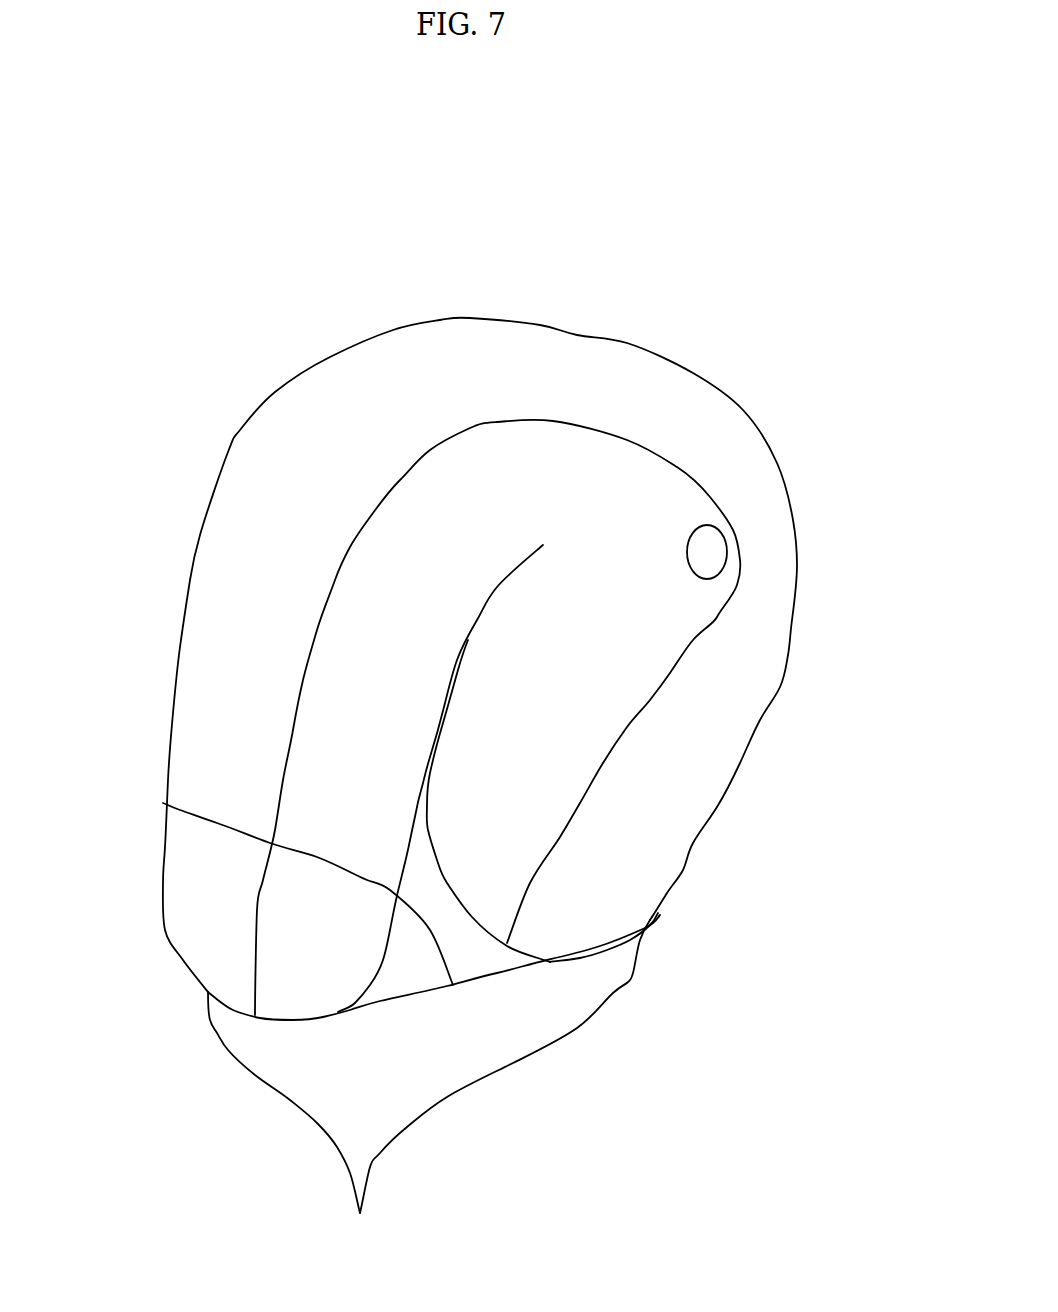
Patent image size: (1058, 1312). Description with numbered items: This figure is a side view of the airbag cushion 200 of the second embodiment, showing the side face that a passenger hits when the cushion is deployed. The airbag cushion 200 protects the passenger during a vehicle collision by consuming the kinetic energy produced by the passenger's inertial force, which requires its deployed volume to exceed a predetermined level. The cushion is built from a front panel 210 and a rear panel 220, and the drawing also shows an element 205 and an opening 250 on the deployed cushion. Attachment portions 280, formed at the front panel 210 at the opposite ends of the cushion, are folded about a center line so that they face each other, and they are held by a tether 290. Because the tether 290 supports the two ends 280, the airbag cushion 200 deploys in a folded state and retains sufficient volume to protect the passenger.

The airbag cushion 200 is at (554, 616).
The ring portion 205 is at (553, 420).
The front panel 210 is at (673, 783).
The rear panel 220 is at (517, 840).
The fastening hole 250 is at (707, 553).
The attachment portions 280 is at (429, 1086).
The tether 290 is at (163, 803).